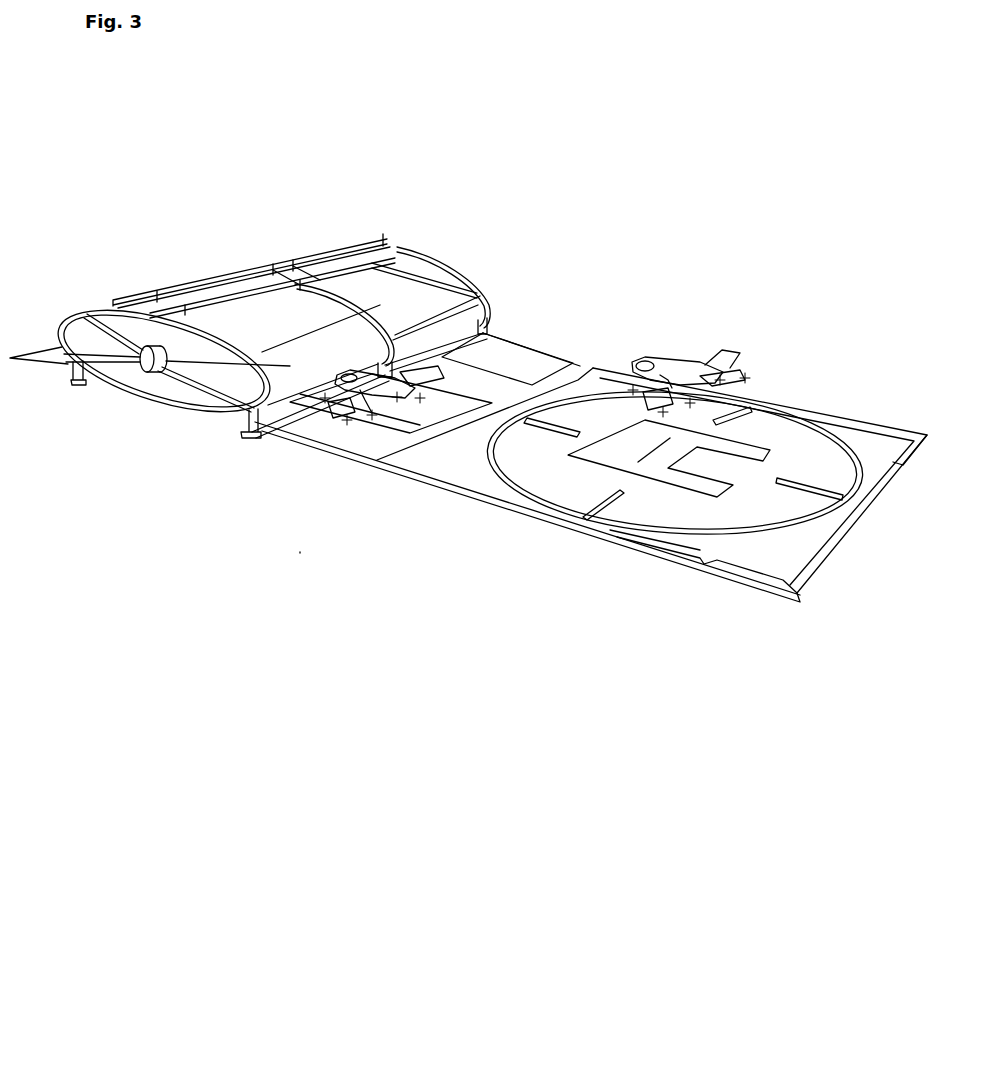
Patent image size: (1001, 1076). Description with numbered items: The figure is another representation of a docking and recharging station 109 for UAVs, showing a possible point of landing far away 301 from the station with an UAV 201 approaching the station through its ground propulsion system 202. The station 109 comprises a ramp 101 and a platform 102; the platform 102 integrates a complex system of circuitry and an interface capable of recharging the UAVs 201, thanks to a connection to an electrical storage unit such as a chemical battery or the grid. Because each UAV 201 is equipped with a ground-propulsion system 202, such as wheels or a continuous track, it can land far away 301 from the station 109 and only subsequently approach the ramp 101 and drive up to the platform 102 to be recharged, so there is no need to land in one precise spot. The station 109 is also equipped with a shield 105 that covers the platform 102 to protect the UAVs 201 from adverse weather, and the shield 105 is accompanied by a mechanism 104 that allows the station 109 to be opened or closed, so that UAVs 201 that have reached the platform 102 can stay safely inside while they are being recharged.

The ramp 101 is at (333, 452).
The platform 102 is at (290, 383).
The mechanism 104 is at (418, 250).
The shield 105 is at (437, 320).
The docking and recharging station 109 is at (300, 552).
The UAV 201 is at (742, 372).
The ground propulsion system 202 is at (660, 407).
The point of landing far from the station 301 is at (700, 545).